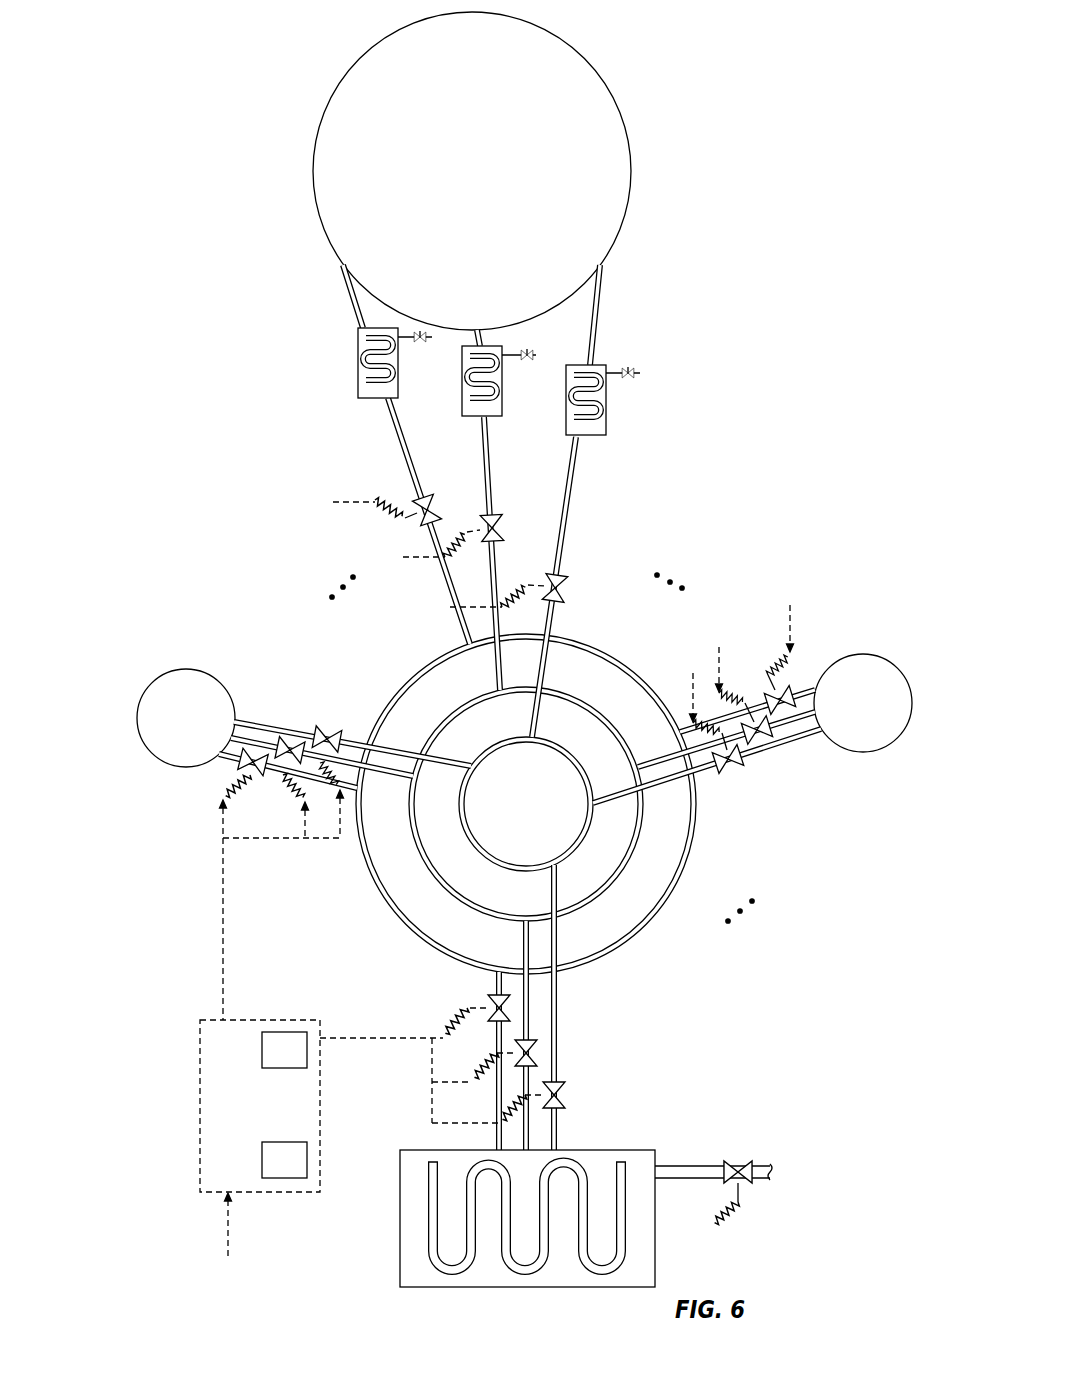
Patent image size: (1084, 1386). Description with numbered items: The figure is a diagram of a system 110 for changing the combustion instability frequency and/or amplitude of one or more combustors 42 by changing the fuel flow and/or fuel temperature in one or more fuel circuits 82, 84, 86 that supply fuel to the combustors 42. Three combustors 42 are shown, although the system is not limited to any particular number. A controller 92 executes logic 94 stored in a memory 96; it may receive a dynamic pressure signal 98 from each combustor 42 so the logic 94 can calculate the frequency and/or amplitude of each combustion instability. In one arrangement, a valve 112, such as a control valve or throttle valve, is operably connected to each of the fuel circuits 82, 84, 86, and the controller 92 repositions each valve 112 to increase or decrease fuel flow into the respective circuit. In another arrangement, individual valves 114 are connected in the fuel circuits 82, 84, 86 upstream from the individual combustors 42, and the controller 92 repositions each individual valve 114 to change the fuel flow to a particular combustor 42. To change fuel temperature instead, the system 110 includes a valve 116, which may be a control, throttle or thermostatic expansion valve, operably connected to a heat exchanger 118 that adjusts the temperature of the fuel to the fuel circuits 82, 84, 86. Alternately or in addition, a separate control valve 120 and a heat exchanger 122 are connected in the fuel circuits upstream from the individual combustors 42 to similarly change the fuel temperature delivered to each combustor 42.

The combustor 42 is at (325, 110).
The fuel circuit 82 is at (363, 857).
The fuel circuit 84 is at (427, 867).
The fuel circuit 86 is at (485, 855).
The controller 92 is at (200, 1068).
The logic 94 is at (297, 1174).
The memory 96 is at (297, 1064).
The dynamic pressure signal 98 is at (228, 1222).
The system 110 is at (140, 548).
The valve 112 is at (566, 1090).
The individual valve 114 is at (565, 582).
The valve 116 is at (748, 1187).
The heat exchanger 118 is at (420, 1287).
The control valve 120 is at (424, 343).
The heat exchanger 122 is at (398, 392).